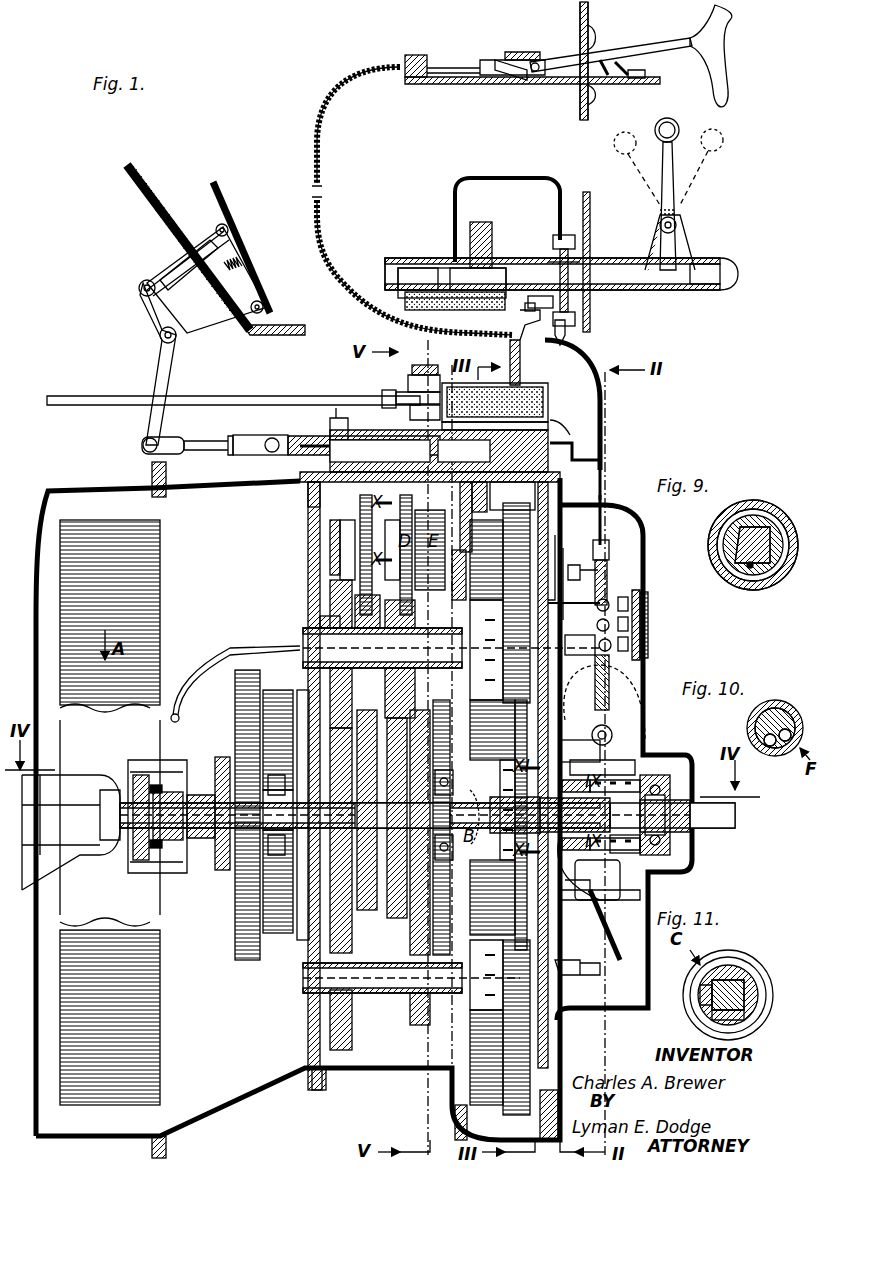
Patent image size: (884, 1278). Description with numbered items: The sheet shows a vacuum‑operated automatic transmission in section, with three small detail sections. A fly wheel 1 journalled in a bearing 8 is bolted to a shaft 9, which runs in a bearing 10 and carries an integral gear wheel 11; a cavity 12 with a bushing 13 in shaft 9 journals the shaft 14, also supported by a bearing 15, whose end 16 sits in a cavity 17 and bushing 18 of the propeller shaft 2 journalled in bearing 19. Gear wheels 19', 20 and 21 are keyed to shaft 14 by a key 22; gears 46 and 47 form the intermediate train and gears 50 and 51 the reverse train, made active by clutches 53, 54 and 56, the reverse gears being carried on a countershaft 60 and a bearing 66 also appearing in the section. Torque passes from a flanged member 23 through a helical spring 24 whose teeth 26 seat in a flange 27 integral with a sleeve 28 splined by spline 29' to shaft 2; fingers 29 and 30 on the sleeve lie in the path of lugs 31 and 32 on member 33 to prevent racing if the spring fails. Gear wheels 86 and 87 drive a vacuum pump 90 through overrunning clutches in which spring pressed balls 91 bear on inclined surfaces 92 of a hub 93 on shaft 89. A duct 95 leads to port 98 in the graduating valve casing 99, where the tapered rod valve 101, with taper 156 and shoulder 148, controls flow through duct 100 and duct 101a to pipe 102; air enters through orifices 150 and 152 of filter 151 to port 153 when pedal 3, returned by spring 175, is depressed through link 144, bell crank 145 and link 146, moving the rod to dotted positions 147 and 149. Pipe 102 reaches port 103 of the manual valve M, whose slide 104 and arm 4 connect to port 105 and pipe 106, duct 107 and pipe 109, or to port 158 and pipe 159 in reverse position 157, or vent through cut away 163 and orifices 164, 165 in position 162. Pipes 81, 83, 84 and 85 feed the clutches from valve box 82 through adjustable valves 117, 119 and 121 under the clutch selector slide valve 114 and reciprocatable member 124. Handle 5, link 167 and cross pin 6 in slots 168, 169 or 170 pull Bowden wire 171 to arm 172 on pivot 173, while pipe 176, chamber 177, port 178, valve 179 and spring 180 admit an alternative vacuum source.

In FIG. 1, the fly wheel 1 is at (148, 1010).
In FIG. 1, the propeller shaft 2 is at (728, 822).
In FIG. 1, the pedal 3 is at (222, 200).
In FIG. 1, the arm 4 is at (680, 132).
In FIG. 1, the handle 5 is at (730, 55).
In FIG. 1, the cross pin 6 is at (595, 60).
In FIG. 1, the bearing 8 is at (80, 785).
In FIG. 1, the shaft 9 is at (248, 827).
In FIG. 1, the bearing 10 is at (315, 870).
In FIG. 1, the gear wheel 11 is at (340, 738).
In FIG. 1, the longitudinal cavity 12 is at (285, 835).
In FIG. 1, the bushing 13 is at (290, 793).
In FIG. 1, the shaft 14 is at (427, 813).
In FIG. 1, the bearing 15 is at (436, 770).
In FIG. 1, the end 16 is at (602, 753).
In FIG. 1, the cavity 17 is at (618, 870).
In FIG. 1, the bushing 18 is at (595, 900).
In FIG. 1, the bearing 19 is at (667, 788).
In FIG. 1, the gear wheel 19' is at (368, 816).
In FIG. 1, the gear wheel 20 is at (390, 912).
In FIG. 1, the gear wheel 21 is at (415, 935).
In FIG. 1, the key 22 is at (402, 813).
In FIG. 1, the flanged member 23 is at (498, 797).
In FIG. 1, the helical spring 24 is at (565, 775).
In FIG. 9, the helical spring 24 is at (730, 577).
In FIG. 9, the projecting teeth 26 is at (722, 515).
In FIG. 1, the flange 27 is at (620, 770).
In FIG. 9, the flange 27 is at (720, 560).
In FIG. 1, the sleeve 28 is at (645, 865).
In FIG. 1, the finger 29 is at (545, 823).
In FIG. 11, the finger 29 is at (701, 1027).
In FIG. 1, the spline 29' is at (679, 816).
In FIG. 9, the spline 29' is at (761, 593).
In FIG. 1, the finger 30 is at (485, 760).
In FIG. 11, the finger 30 is at (745, 965).
In FIG. 1, the lug 31 is at (500, 860).
In FIG. 11, the lug 31 is at (756, 1012).
In FIG. 11, the lug 32 is at (705, 975).
In FIG. 11, the flange member 33 is at (700, 995).
In FIG. 1, the gear 46 is at (333, 580).
In FIG. 1, the gear 47 is at (386, 690).
In FIG. 1, the gear 50 is at (352, 1045).
In FIG. 1, the gear 51 is at (410, 1020).
In FIG. 1, the clutch 53 is at (250, 720).
In FIG. 1, the clutch 54 is at (500, 603).
In FIG. 1, the clutch 56 is at (500, 1031).
In FIG. 1, the countershaft 60 is at (310, 975).
In FIG. 1, the bearing 66 is at (306, 642).
In FIG. 1, the pipe 81 is at (303, 645).
In FIG. 1, the valve box 82 is at (578, 596).
In FIG. 1, the pipe 83 is at (588, 634).
In FIG. 1, the pipe 84 is at (225, 635).
In FIG. 1, the pipe 85 is at (586, 945).
In FIG. 1, the gear wheel 86 is at (308, 492).
In FIG. 1, the gear wheel 87 is at (400, 530).
In FIG. 1, the gear wheel / shaft 89 is at (340, 528).
In FIG. 10, the gear wheel / shaft 89 is at (770, 748).
In FIG. 1, the vacuum pump 90 is at (430, 550).
In FIG. 10, the spring pressed balls 91 is at (755, 722).
In FIG. 10, the inclined surfaces 92 is at (790, 700).
In FIG. 1, the hub 93 is at (332, 543).
In FIG. 10, the hub 93 is at (788, 745).
In FIG. 1, the duct 95 is at (458, 550).
In FIG. 1, the duct or port 98 is at (478, 500).
In FIG. 1, the graduating valve casing 99 is at (330, 425).
In FIG. 1, the longitudinal rod valve duct 100 is at (572, 437).
In FIG. 1, the graduated rod valve 101 is at (336, 444).
In FIG. 1, the duct 101a is at (491, 503).
In FIG. 1, the pipe 102 is at (430, 215).
In FIG. 1, the port 103 is at (590, 245).
In FIG. 1, the slide valve 104 is at (700, 285).
In FIG. 1, the port 105 is at (556, 302).
In FIG. 1, the pipe 106 is at (568, 335).
In FIG. 1, the duct 107 is at (575, 478).
In FIG. 1, the pipe 109 is at (572, 565).
In FIG. 1, the clutch selector slide valve 114 is at (609, 684).
In FIG. 1, the adjustable valve 117 is at (628, 648).
In FIG. 1, the adjustable valve 119 is at (628, 622).
In FIG. 1, the adjustable valve 121 is at (628, 600).
In FIG. 1, the reciprocatable member 124 is at (598, 728).
In FIG. 1, the link 144 is at (170, 260).
In FIG. 1, the bell crank 145 is at (153, 312).
In FIG. 1, the link 146 is at (206, 443).
In FIG. 1, the dotted line 147 is at (560, 455).
In FIG. 1, the shoulder 148 is at (464, 451).
In FIG. 1, the dotted line 149 is at (512, 496).
In FIG. 1, the orifices 150 is at (520, 365).
In FIG. 1, the air filter 151 is at (548, 395).
In FIG. 1, the orifices 152 is at (544, 402).
In FIG. 1, the port 153 is at (548, 426).
In FIG. 1, the tapered portion 156 is at (380, 442).
In FIG. 1, the dotted line position 157 is at (724, 140).
In FIG. 1, the port 158 is at (545, 260).
In FIG. 1, the pipe 159 is at (525, 325).
In FIG. 1, the dotted line position 162 is at (622, 153).
In FIG. 1, the cut away portion 163 is at (430, 268).
In FIG. 1, the orifices 164 is at (415, 268).
In FIG. 1, the orifices 165 is at (465, 310).
In FIG. 1, the link 167 is at (540, 55).
In FIG. 1, the slot 168 is at (640, 76).
In FIG. 1, the slot 169 is at (620, 78).
In FIG. 1, the slot 170 is at (602, 78).
In FIG. 1, the Bowden wire 171 is at (455, 68).
In FIG. 1, the arm 172 is at (610, 560).
In FIG. 1, the pivot 173 is at (608, 570).
In FIG. 1, the spring 175 is at (250, 275).
In FIG. 1, the pipe 176 is at (253, 397).
In FIG. 1, the chamber 177 is at (386, 392).
In FIG. 1, the port 178 is at (410, 390).
In FIG. 1, the valve 179 is at (412, 412).
In FIG. 1, the spring 180 is at (412, 368).
In FIG. 1, the manually operable valve M is at (738, 272).